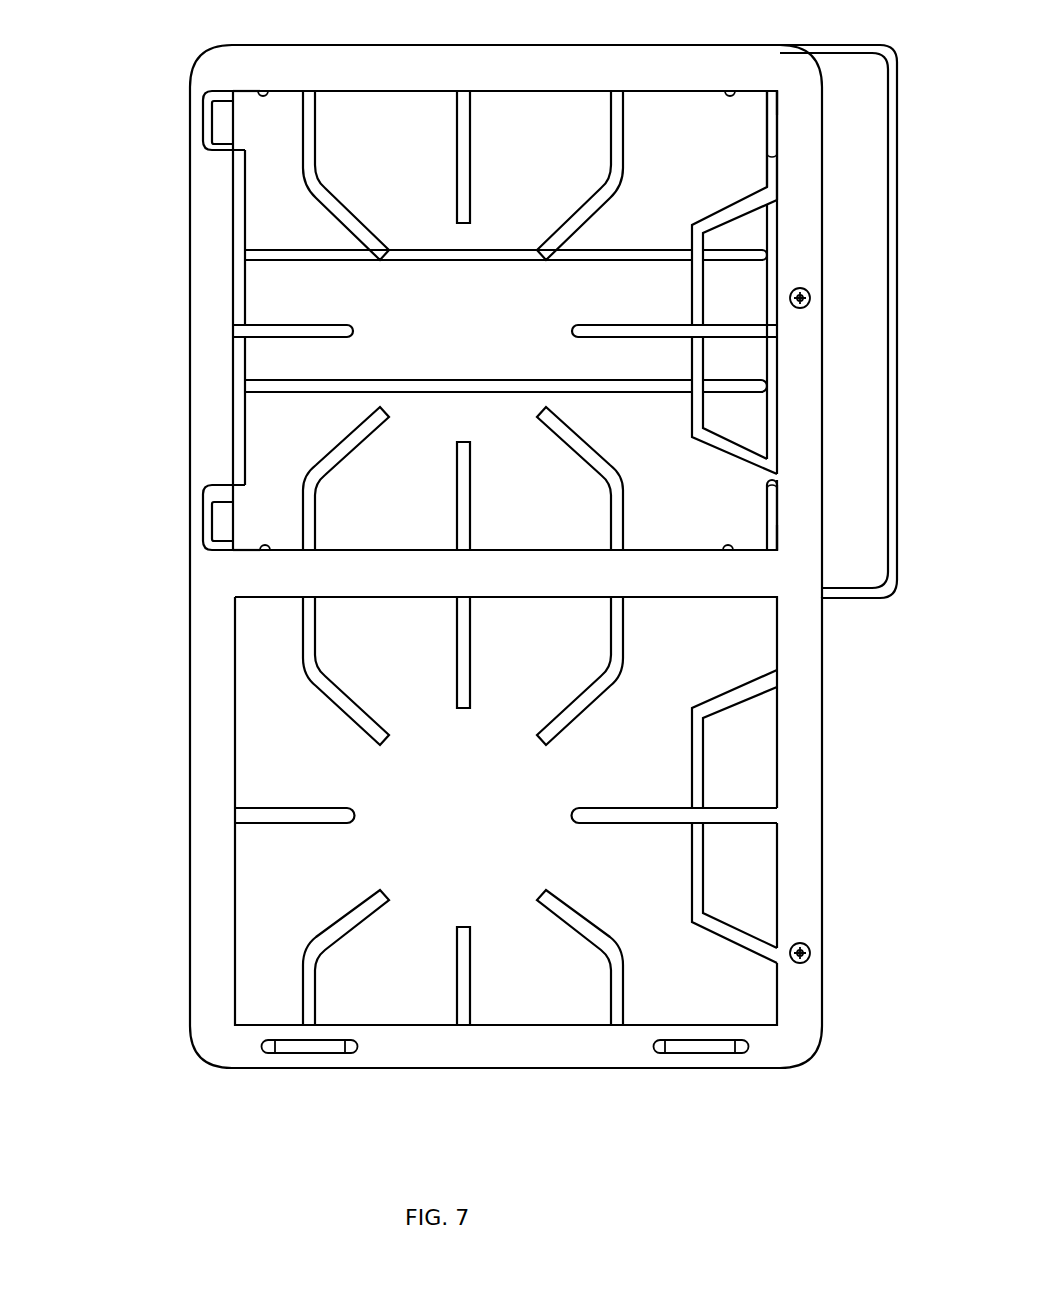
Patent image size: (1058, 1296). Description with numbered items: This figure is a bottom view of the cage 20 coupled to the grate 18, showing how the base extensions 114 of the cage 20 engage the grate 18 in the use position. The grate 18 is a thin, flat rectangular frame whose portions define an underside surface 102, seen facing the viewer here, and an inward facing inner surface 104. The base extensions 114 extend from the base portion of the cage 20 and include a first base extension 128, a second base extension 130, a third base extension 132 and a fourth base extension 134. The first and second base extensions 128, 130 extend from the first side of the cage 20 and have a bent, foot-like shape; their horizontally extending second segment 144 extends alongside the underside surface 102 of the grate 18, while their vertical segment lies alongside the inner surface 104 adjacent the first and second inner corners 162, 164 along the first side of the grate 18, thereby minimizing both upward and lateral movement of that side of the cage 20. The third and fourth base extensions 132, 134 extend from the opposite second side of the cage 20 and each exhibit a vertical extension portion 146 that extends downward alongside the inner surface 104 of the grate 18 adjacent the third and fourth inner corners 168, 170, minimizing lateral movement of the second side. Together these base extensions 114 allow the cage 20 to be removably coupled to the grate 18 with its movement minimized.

The grate 18 is at (828, 808).
The cage 20 is at (902, 390).
The underside surface 102 is at (205, 312).
The inner surface 104 is at (266, 88).
The base extensions 114 is at (410, 320).
The first base extension 128 is at (209, 487).
The second base extension 130 is at (209, 154).
The third base extension 132 is at (764, 506).
The fourth base extension 134 is at (764, 150).
The second segment 144 is at (206, 126).
The vertical extension portion 146 is at (766, 127).
The first inner corner 162 is at (228, 557).
The second inner corner 164 is at (226, 86).
The third inner corner 168 is at (785, 560).
The fourth inner corner 170 is at (780, 84).